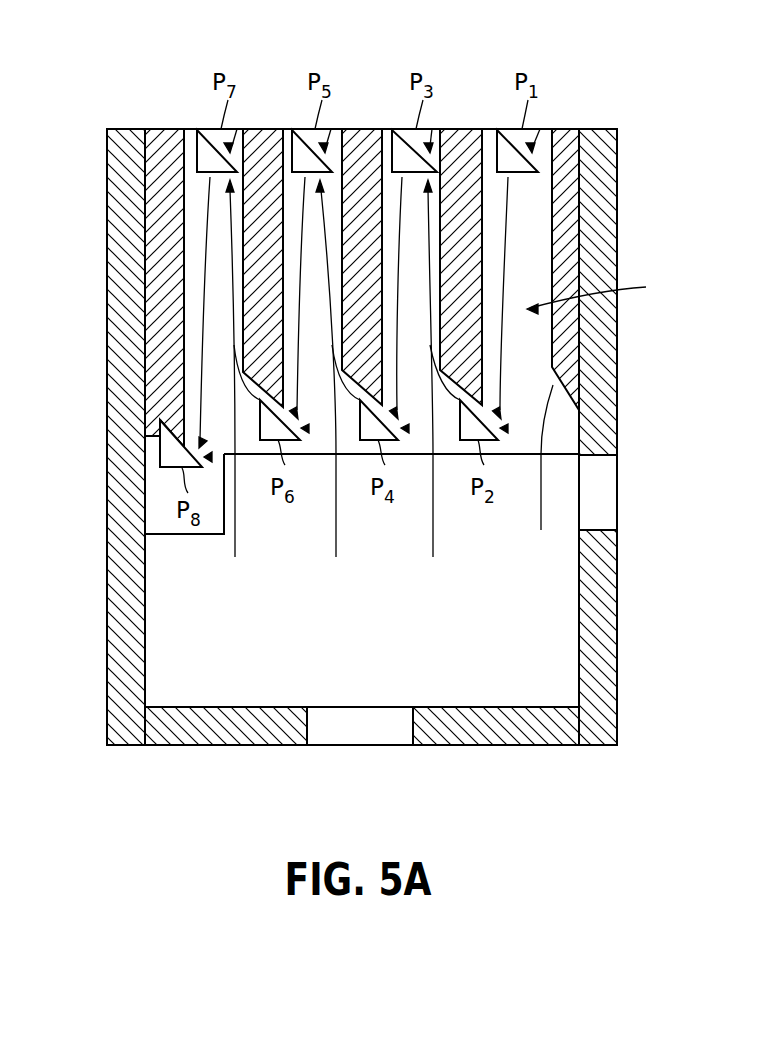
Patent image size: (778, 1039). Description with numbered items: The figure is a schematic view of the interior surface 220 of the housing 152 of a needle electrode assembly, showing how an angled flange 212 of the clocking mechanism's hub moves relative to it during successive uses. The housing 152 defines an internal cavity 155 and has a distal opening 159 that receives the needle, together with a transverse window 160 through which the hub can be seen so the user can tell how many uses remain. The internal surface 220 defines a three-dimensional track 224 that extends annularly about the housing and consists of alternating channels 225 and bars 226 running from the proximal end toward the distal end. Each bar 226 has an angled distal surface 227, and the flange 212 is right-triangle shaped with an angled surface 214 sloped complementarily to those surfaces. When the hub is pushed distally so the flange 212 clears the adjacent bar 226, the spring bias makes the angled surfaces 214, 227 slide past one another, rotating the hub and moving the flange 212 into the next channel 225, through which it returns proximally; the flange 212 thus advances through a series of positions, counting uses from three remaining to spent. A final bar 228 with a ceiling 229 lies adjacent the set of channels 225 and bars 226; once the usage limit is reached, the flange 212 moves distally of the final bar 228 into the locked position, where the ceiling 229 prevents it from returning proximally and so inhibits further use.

The housing 152 is at (612, 352).
The internal cavity 155 is at (568, 430).
The distal opening 159 is at (333, 733).
The transverse window 160 is at (607, 497).
The angled flange 212 is at (197, 160).
The angled surface 214 is at (237, 129).
The internal surface 220 is at (592, 634).
The three-dimensional track 224 is at (607, 294).
The channel 225 is at (313, 267).
The bar 226 is at (262, 235).
The angled distal surface 227 is at (386, 384).
The final bar 228 is at (163, 313).
The ceiling 229 is at (158, 423).